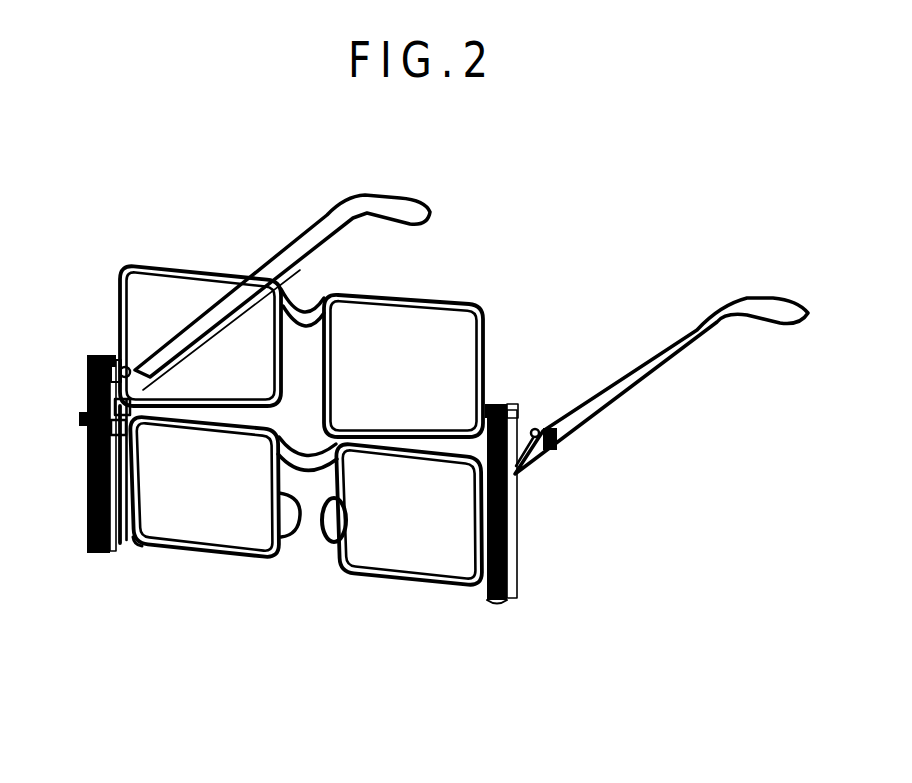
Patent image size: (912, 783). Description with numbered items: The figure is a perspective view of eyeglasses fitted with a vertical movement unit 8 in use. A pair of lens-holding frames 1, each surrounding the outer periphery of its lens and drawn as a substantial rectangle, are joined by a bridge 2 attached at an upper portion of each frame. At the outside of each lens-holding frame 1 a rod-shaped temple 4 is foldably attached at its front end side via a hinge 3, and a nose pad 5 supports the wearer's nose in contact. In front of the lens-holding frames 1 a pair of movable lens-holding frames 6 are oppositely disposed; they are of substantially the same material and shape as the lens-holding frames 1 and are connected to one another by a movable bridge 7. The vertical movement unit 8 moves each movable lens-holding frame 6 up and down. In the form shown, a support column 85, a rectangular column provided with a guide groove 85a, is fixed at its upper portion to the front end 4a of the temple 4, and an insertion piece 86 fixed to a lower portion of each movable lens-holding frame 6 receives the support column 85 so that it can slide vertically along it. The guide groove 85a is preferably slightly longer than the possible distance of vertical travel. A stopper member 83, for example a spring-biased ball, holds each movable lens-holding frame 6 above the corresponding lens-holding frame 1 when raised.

The lens-holding frame 1 is at (308, 591).
The bridge 2 is at (253, 561).
The hinge 3 is at (336, 319).
The temple 4 is at (471, 290).
The front end of the temple 4a is at (166, 654).
The nose pad 5 is at (312, 627).
The movable lens-holding frame 6 is at (360, 275).
The movable bridge 7 is at (404, 265).
The vertical movement unit 8 is at (396, 540).
The stopper member 83 is at (601, 485).
The support column 85 is at (598, 532).
The guide groove 85a is at (603, 645).
The insertion piece 86 is at (610, 512).